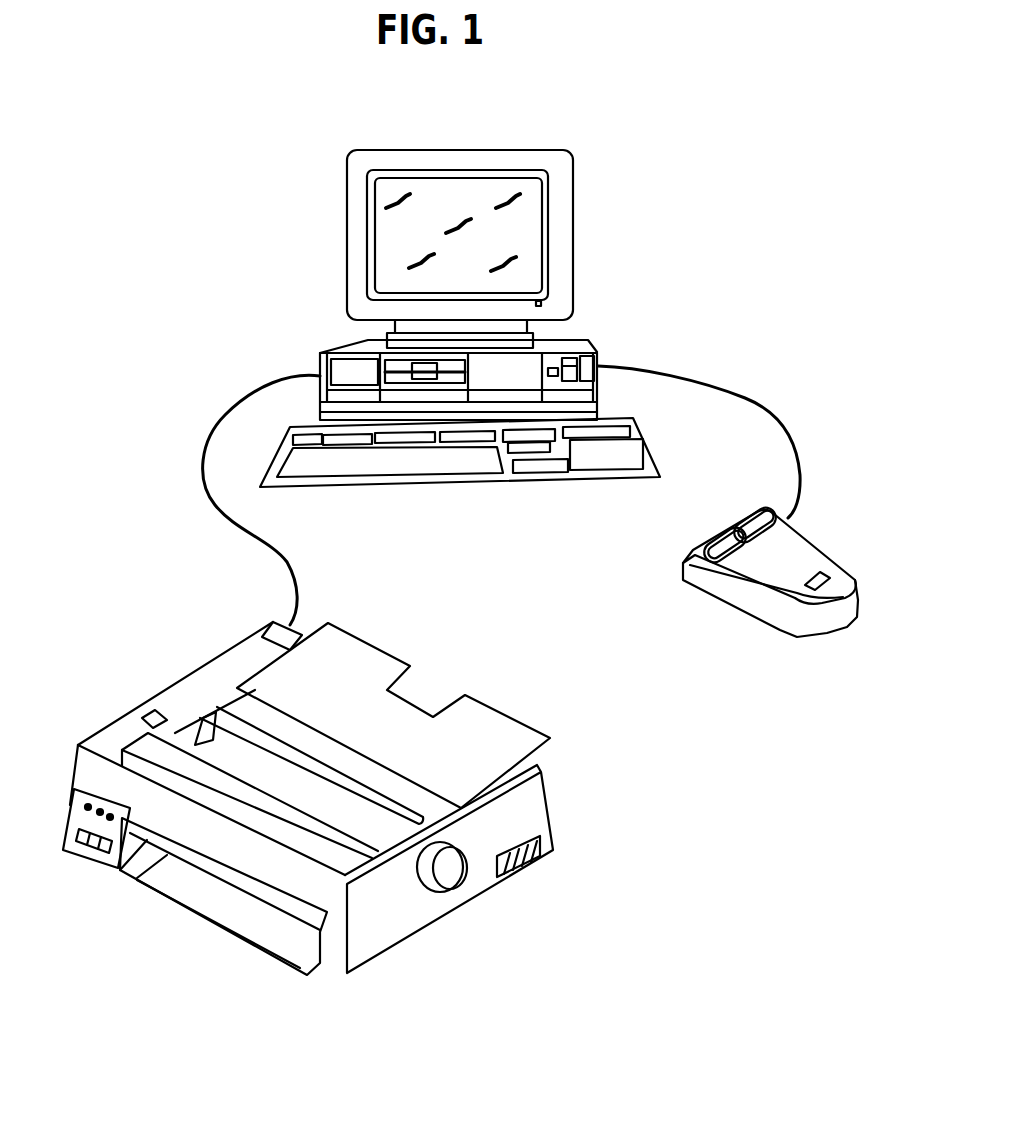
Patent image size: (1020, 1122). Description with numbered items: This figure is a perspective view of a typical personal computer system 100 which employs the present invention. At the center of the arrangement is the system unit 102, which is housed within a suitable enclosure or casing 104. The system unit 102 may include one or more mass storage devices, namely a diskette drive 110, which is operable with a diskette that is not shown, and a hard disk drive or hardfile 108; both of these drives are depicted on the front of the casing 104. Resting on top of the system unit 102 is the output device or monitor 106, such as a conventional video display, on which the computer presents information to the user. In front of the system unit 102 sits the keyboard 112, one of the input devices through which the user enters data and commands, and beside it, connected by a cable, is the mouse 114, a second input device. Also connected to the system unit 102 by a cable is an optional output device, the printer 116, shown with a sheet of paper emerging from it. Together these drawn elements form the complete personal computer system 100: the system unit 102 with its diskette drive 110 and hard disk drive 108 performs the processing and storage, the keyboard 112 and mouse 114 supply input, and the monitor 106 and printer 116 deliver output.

The personal computer system 100 is at (700, 690).
The system unit 102 is at (598, 349).
The enclosure or casing 104 is at (573, 343).
The monitor 106 is at (577, 193).
The hard disk drive 108 is at (513, 369).
The diskette drive 110 is at (383, 365).
The keyboard 112 is at (510, 487).
The mouse 114 is at (820, 543).
The printer 116 is at (507, 718).